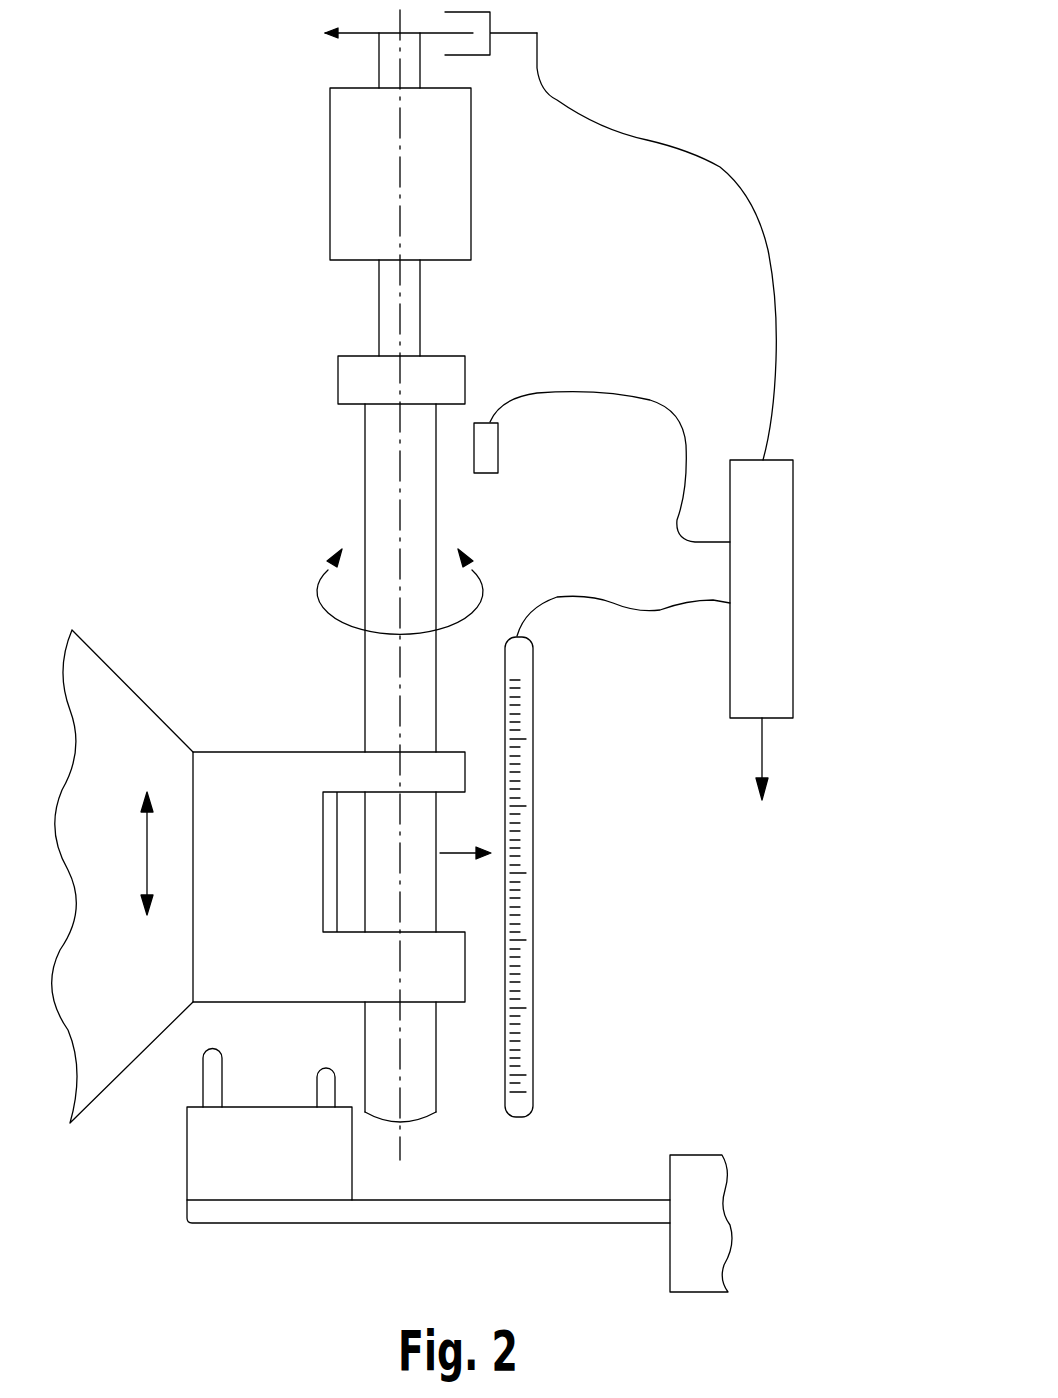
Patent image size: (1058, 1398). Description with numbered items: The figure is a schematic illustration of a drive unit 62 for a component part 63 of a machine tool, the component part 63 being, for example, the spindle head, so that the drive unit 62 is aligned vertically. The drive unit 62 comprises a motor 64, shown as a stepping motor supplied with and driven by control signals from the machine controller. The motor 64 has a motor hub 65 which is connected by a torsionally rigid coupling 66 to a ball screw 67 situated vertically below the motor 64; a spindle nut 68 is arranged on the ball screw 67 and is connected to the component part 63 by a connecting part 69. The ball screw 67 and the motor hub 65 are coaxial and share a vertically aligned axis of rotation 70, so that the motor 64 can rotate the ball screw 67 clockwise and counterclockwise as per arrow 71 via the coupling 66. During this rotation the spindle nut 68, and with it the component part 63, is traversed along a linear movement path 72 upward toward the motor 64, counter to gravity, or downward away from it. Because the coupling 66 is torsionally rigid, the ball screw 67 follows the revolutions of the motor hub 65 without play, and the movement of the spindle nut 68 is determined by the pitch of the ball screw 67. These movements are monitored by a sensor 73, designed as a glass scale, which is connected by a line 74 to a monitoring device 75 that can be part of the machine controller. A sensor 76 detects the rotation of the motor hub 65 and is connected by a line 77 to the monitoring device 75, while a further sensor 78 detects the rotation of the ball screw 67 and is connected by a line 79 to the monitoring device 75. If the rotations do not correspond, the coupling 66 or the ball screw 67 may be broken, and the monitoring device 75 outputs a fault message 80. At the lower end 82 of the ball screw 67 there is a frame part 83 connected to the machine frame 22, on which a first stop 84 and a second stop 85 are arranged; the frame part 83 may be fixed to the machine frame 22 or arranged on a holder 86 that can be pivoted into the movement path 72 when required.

The machine frame 22 is at (710, 1228).
The drive unit 62 is at (820, 185).
The component part 63 is at (127, 722).
The motor 64 is at (348, 177).
The motor hub 65 is at (398, 309).
The coupling 66 is at (352, 384).
The ball screw 67 is at (425, 518).
The spindle nut 68 is at (420, 912).
The connecting part 69 is at (247, 778).
The axis of rotation 70 is at (403, 483).
The arrow 71 is at (321, 600).
The linear movement path 72 is at (148, 853).
The sensor 73 is at (512, 987).
The line 74 is at (598, 602).
The monitoring device 75 is at (772, 574).
The sensor 76 is at (595, 33).
The line 77 is at (703, 157).
The sensor 78 is at (486, 452).
The line 79 is at (601, 391).
The fault message 80 is at (763, 745).
The lower end 82 is at (437, 1115).
The frame part 83 is at (287, 1180).
The first stop 84 is at (213, 1090).
The second stop 85 is at (327, 1077).
The holder 86 is at (557, 1210).